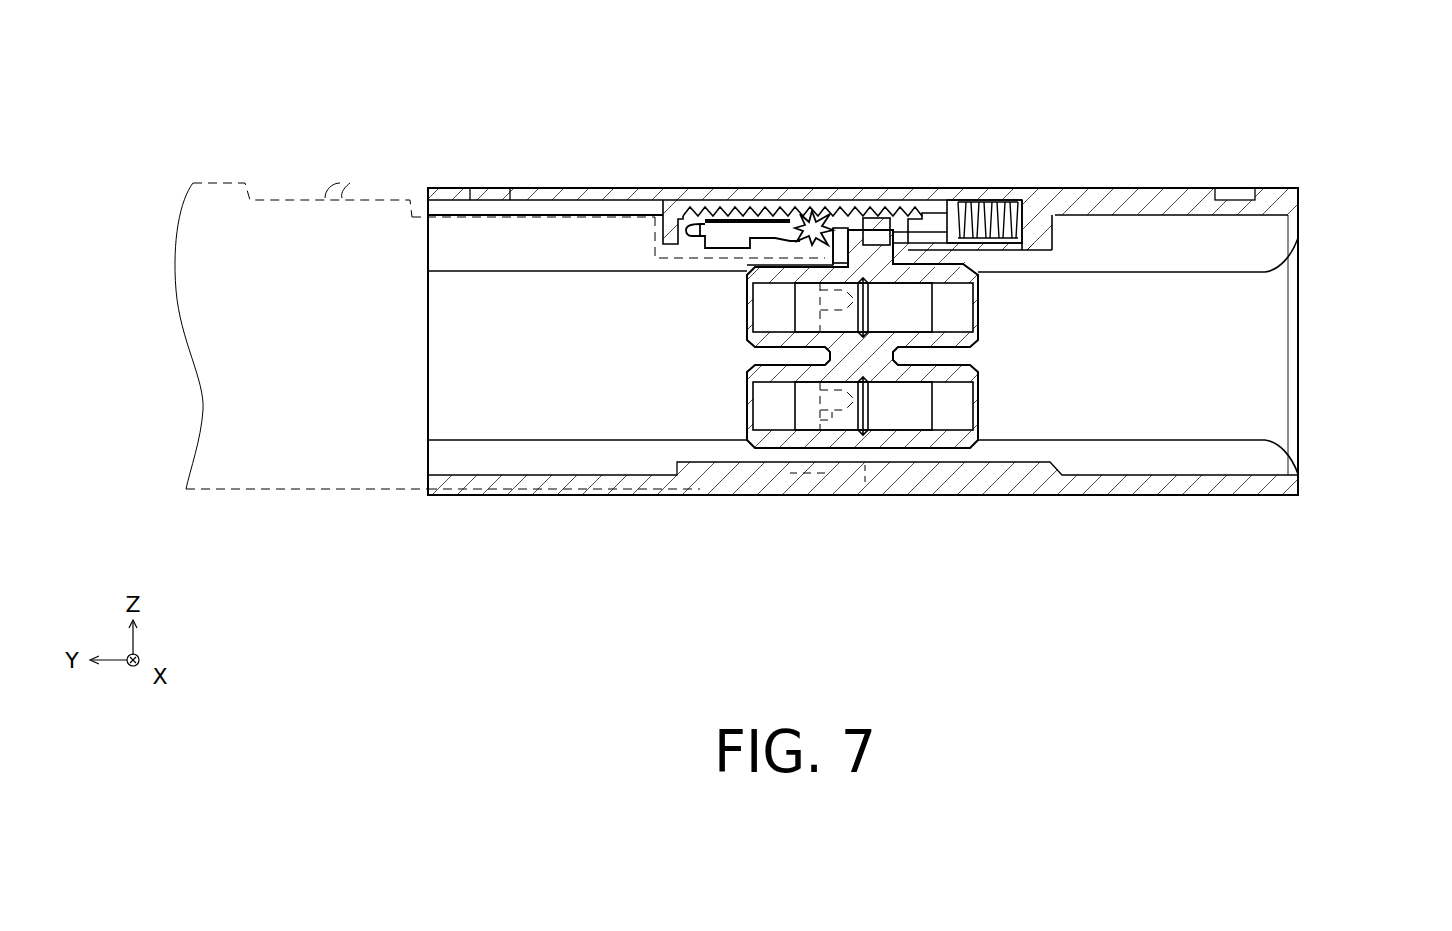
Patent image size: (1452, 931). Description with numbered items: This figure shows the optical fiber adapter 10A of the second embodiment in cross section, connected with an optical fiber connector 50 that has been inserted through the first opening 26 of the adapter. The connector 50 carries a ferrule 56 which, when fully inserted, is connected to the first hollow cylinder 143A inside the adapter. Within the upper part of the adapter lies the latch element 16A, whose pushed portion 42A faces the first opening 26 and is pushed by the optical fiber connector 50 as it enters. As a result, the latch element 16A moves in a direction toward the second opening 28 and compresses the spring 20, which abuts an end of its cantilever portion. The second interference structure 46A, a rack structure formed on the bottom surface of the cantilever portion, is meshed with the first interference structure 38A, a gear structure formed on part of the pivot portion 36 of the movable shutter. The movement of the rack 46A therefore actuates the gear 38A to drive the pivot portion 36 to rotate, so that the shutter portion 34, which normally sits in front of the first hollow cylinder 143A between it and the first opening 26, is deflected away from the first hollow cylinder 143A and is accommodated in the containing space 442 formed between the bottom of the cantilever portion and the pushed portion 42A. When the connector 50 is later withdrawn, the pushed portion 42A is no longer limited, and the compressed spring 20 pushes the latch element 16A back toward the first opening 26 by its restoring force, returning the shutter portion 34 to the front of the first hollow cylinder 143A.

The optical fiber adapter 10A is at (1244, 168).
The latch element 16A is at (877, 228).
The spring 20 is at (992, 214).
The first opening 26 is at (428, 492).
The second opening 28 is at (1335, 383).
The shutter portion 34 is at (731, 214).
The pivot portion 36 is at (815, 212).
The first interference structure 38A is at (832, 228).
The pushed portion 42A is at (682, 232).
The containing space 442 is at (700, 248).
The second interference structure 46A is at (765, 219).
The optical fiber connector 50 is at (259, 168).
The ferrule 56 is at (898, 503).
The first hollow cylinder 143A is at (798, 460).